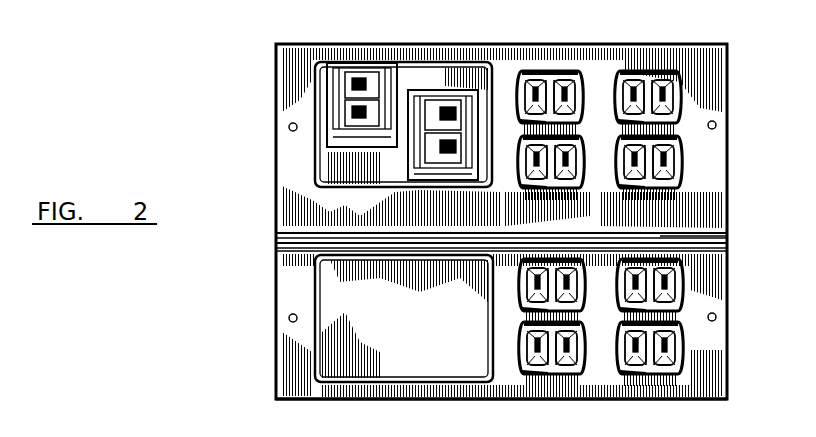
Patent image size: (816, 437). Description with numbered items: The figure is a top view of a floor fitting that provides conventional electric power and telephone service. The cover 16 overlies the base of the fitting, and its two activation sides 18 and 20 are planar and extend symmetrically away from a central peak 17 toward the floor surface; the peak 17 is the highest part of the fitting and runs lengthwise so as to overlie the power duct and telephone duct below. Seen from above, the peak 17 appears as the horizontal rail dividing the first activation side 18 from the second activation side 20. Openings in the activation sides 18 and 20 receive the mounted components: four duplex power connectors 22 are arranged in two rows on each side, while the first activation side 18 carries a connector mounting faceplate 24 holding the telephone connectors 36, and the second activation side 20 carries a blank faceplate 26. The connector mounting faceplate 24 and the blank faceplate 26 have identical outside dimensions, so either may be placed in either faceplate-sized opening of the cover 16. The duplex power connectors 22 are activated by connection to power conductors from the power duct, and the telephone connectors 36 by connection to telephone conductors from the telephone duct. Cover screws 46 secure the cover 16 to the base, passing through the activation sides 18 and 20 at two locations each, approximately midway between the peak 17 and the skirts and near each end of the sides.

The cover 16 is at (275, 247).
The peak 17 is at (695, 235).
The first activation side 18 is at (513, 72).
The second activation side 20 is at (510, 366).
The duplex power connector 22 is at (625, 75).
The connector mounting faceplate 24 is at (436, 77).
The blank faceplate 26 is at (390, 357).
The telephone connector 36 is at (413, 117).
The cover screw 46 is at (289, 126).